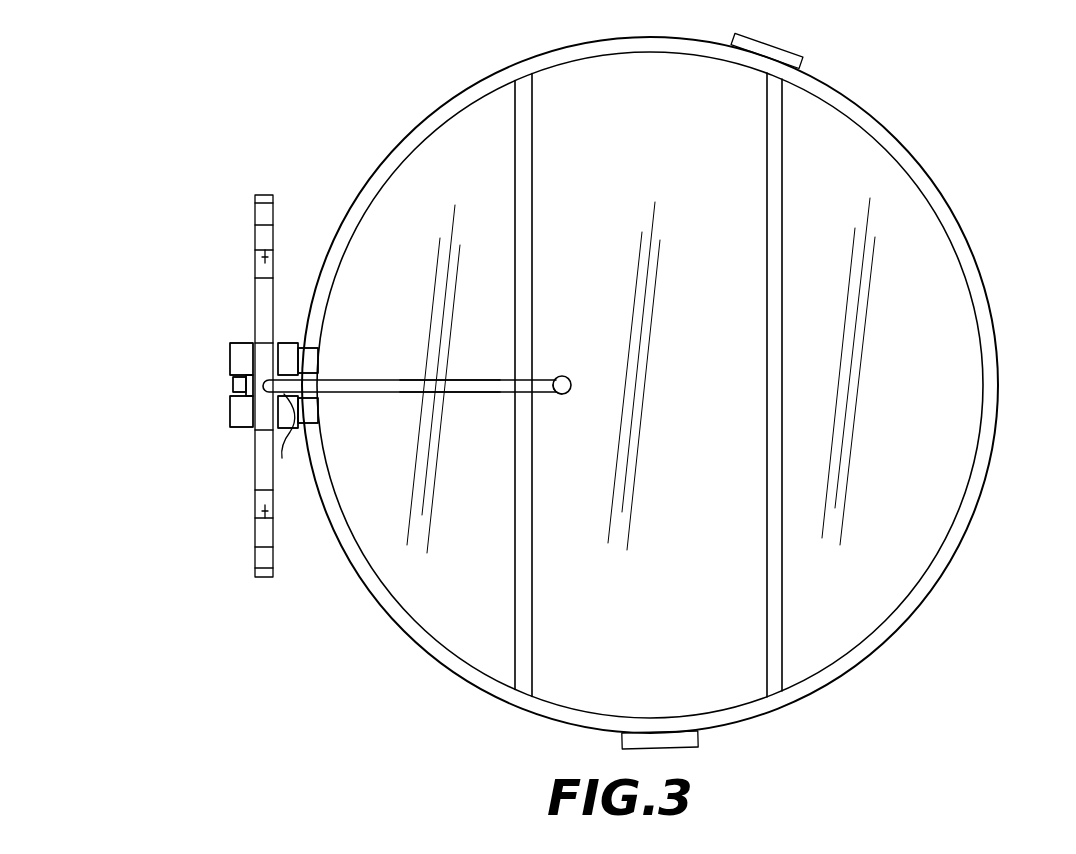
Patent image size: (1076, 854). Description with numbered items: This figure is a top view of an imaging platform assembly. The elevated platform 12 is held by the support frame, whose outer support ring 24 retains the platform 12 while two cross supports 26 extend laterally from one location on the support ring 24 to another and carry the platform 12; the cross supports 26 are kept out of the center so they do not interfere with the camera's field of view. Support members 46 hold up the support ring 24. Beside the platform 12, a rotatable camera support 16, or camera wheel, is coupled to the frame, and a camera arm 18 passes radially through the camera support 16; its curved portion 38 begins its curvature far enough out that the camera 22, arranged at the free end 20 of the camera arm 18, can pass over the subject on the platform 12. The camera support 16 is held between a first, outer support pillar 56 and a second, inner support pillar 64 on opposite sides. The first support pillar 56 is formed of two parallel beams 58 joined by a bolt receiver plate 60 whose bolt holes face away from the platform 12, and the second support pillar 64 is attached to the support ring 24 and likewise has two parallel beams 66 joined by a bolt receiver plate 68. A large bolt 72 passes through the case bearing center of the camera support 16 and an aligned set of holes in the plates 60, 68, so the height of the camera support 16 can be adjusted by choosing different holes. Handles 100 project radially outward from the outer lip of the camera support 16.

The elevated platform 12 is at (860, 186).
The rotatable camera support 16 is at (266, 190).
The camera arm 18 is at (417, 377).
The free end 20 is at (557, 393).
The camera 22 is at (565, 376).
The outer support ring 24 is at (989, 274).
The cross supports 26 is at (533, 145).
The curved portion 38 is at (455, 393).
The support members 46 is at (806, 60).
The first outer support pillar 56 is at (239, 332).
The parallel beams 58 is at (240, 345).
The bolt receiver plate 60 is at (235, 383).
The second inner support pillar 64 is at (289, 336).
The parallel beams 66 is at (303, 362).
The bolt receiver plate 68 is at (289, 438).
The bolt 72 is at (236, 387).
The handles 100 is at (262, 249).